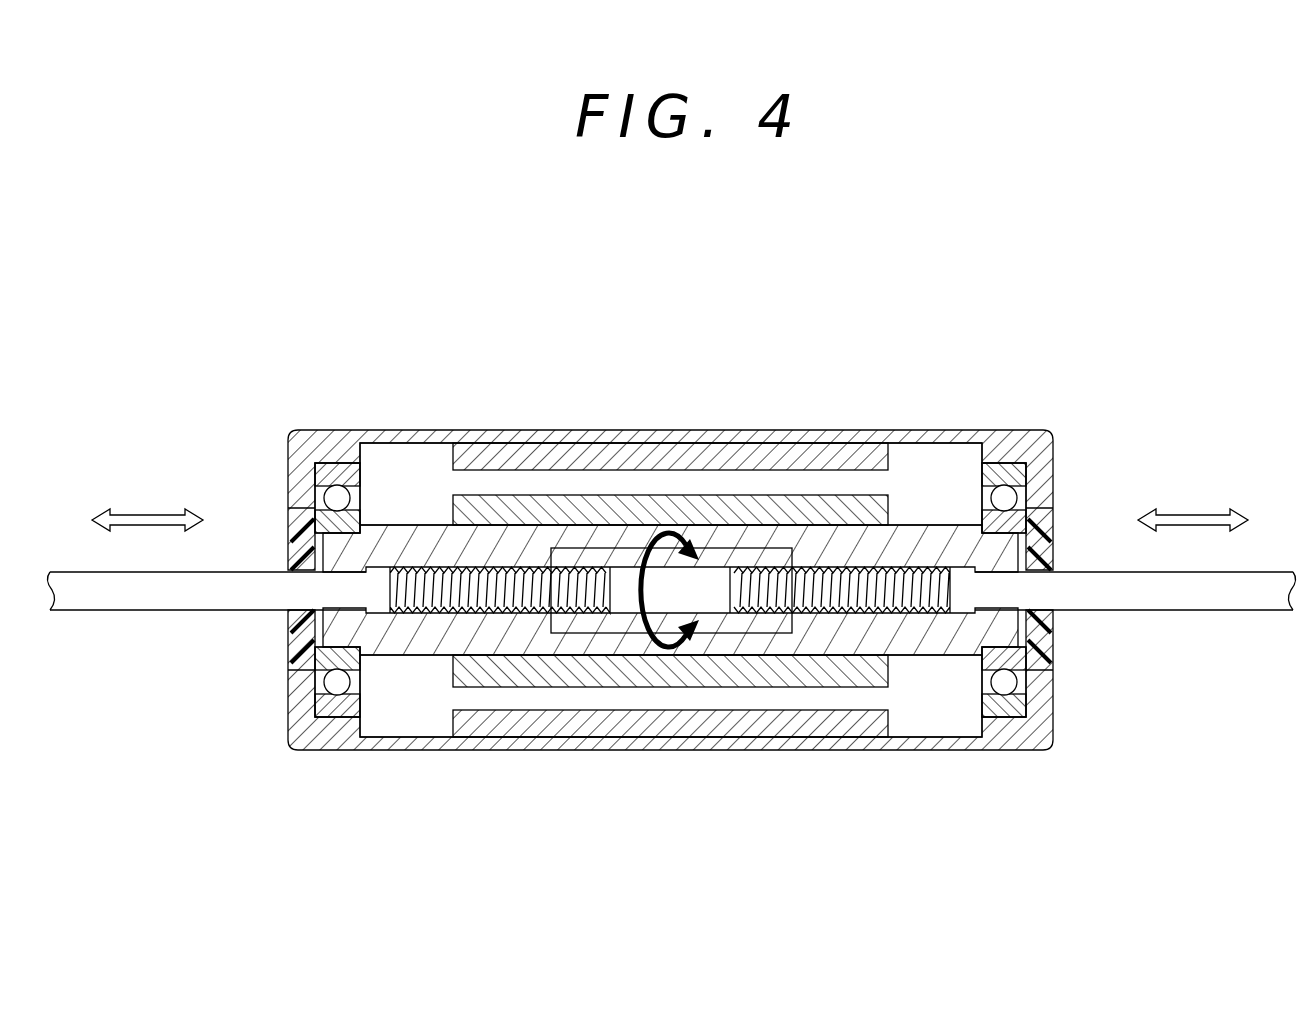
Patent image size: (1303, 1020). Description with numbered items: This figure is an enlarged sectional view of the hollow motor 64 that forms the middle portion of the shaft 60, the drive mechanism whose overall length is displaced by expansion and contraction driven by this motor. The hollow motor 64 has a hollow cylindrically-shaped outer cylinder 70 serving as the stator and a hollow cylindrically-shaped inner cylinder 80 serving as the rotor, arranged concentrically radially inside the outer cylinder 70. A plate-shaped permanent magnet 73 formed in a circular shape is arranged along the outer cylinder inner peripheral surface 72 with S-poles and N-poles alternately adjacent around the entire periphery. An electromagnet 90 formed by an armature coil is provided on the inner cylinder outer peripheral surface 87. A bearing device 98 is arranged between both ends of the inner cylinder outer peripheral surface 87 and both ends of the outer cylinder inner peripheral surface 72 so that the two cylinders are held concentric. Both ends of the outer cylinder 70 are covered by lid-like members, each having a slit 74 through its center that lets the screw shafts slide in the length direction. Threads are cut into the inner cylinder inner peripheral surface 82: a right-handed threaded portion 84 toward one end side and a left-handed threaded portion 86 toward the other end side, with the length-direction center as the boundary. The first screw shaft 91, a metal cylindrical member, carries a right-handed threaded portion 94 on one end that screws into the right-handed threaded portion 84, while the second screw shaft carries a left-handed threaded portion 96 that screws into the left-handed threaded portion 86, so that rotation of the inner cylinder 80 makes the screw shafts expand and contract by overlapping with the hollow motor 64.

The shaft 60 is at (890, 306).
The hollow motor 64 is at (617, 430).
The outer cylinder 70 is at (1005, 437).
The outer cylinder inner peripheral surface 72 is at (926, 452).
The permanent magnet 73 is at (730, 447).
The slit 74 is at (295, 577).
The inner cylinder 80 is at (900, 645).
The inner cylinder inner peripheral surface 82 is at (670, 592).
The right-handed threaded portion 84 is at (436, 585).
The left-handed threaded portion 86 is at (838, 600).
The inner cylinder outer peripheral surface 87 is at (915, 657).
The electromagnet 90 is at (805, 495).
The first screw shaft 91 is at (152, 612).
The right-handed threaded portion 94 is at (583, 575).
The left-handed threaded portion 96 is at (762, 605).
The bearing device 98 is at (320, 476).